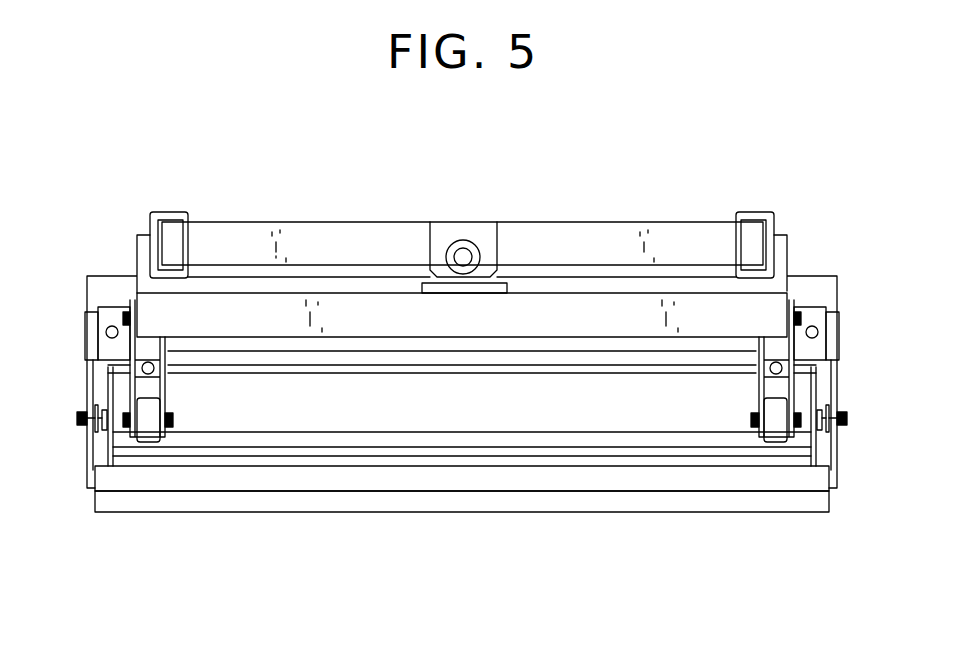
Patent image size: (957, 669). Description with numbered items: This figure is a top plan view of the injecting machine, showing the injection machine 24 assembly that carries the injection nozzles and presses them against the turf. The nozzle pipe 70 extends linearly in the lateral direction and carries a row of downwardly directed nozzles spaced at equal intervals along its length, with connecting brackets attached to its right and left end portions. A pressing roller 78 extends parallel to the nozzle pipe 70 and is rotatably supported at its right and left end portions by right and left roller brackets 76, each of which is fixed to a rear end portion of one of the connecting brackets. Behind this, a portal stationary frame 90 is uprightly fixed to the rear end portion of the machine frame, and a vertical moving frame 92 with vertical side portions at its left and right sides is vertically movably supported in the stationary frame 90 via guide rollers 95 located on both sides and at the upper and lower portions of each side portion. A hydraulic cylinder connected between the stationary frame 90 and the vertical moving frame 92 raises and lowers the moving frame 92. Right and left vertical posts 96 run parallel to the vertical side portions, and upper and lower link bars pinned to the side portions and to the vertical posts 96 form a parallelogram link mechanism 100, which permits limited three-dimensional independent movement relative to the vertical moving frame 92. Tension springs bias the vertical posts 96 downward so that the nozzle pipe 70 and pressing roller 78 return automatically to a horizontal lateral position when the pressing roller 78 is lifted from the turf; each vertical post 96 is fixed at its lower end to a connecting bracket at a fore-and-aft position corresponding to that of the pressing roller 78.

The sensor mount block 24 is at (495, 218).
The portal stationary frame 90 is at (616, 237).
The vertical moving frame 92 is at (354, 310).
The guide rollers 95 is at (172, 237).
The nozzle pipe 70 is at (108, 305).
The roller brackets 76 is at (85, 385).
The pressing roller 78 is at (444, 442).
The vertical posts 96 is at (150, 438).
The parallelogram link mechanism 100 is at (170, 395).